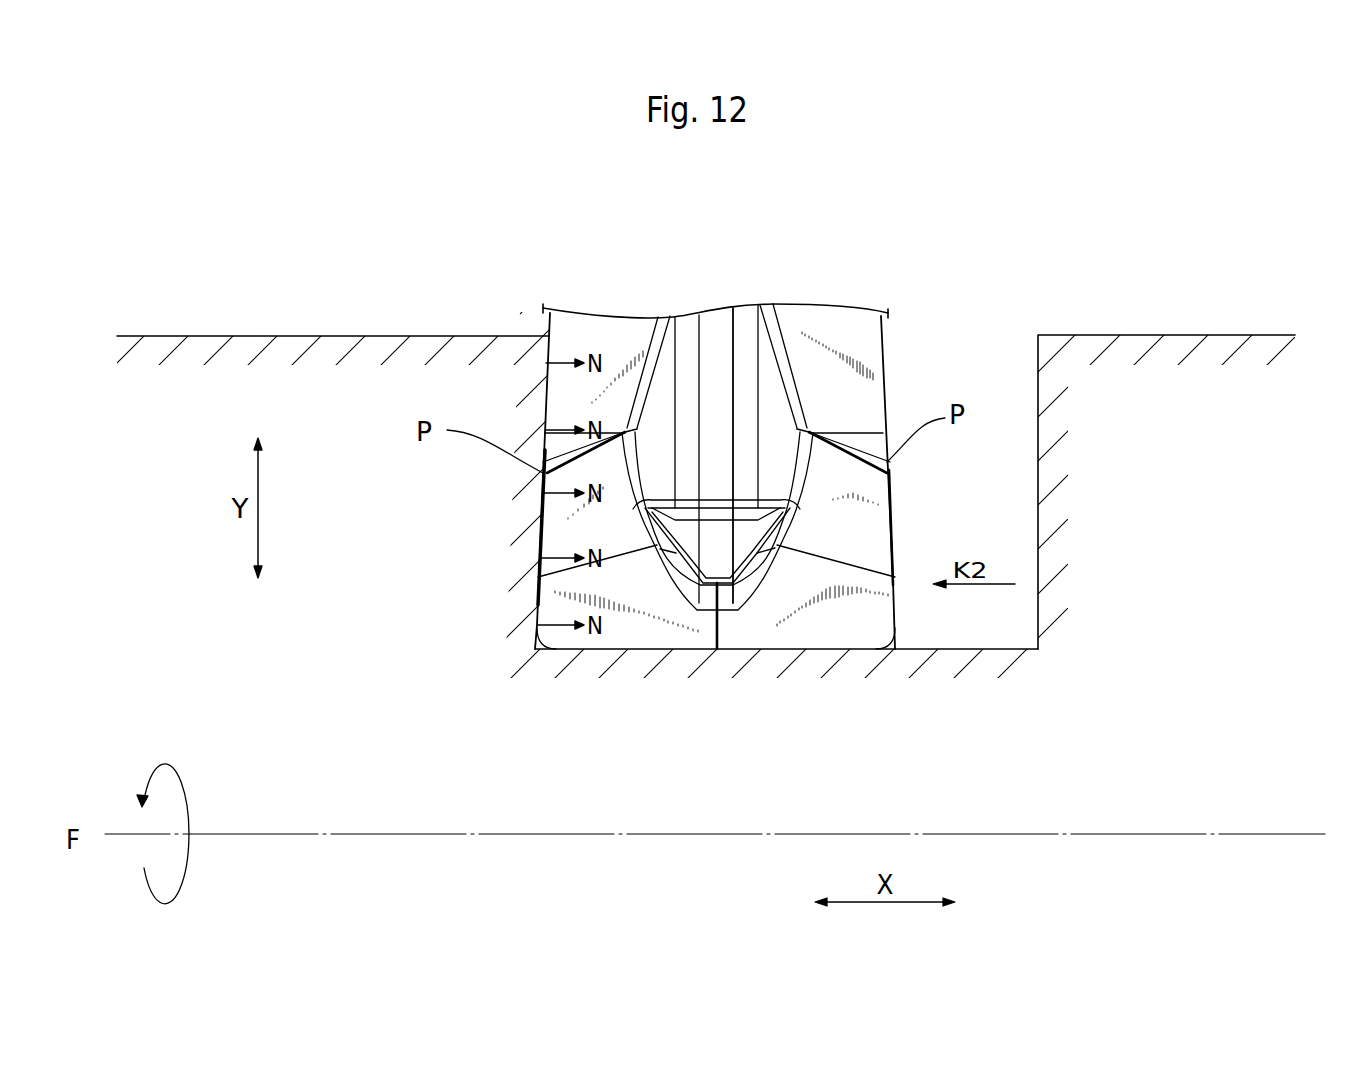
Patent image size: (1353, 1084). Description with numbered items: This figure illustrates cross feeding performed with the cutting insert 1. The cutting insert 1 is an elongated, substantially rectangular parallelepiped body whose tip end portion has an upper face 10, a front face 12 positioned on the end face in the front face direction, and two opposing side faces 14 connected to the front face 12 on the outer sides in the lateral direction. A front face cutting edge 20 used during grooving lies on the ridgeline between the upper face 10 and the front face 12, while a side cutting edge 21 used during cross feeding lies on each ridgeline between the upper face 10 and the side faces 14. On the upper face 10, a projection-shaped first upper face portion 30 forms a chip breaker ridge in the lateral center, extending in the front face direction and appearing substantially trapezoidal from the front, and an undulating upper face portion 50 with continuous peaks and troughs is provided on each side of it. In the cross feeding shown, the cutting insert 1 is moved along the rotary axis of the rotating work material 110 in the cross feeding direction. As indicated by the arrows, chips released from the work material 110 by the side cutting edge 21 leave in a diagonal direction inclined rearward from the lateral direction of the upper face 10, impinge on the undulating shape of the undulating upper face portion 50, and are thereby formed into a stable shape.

The cutting insert 1 is at (905, 296).
The upper face 10 is at (557, 518).
The front face 12 is at (808, 652).
The side faces 14 is at (890, 541).
The front face cutting edge 20 is at (628, 653).
The side cutting edge 21 is at (566, 483).
The first upper face portion 30 is at (724, 557).
The undulating upper face portion 50 is at (553, 585).
The work material 110 is at (243, 336).